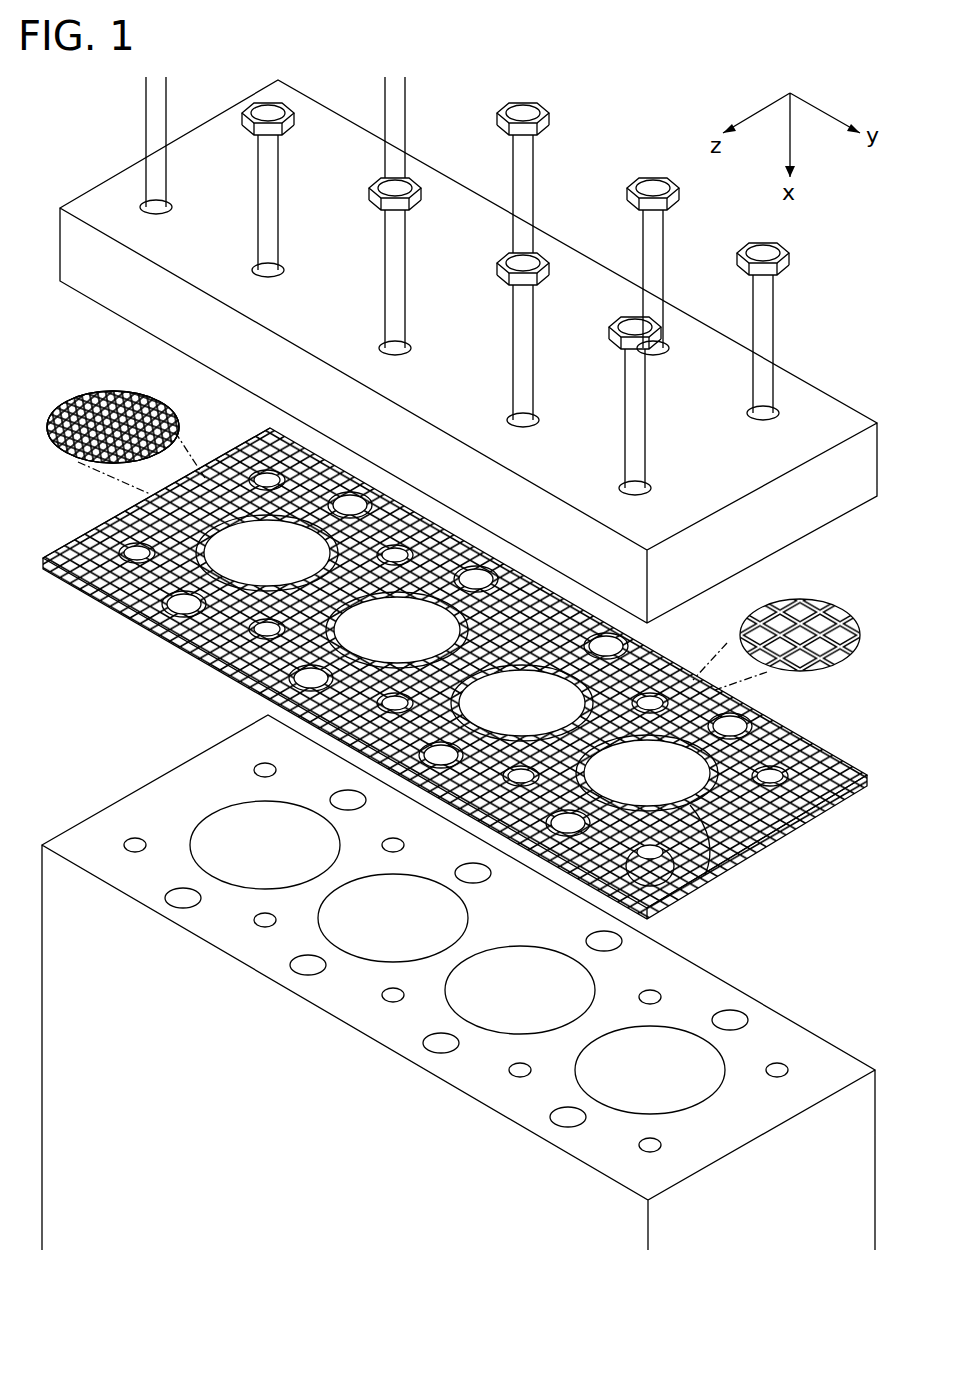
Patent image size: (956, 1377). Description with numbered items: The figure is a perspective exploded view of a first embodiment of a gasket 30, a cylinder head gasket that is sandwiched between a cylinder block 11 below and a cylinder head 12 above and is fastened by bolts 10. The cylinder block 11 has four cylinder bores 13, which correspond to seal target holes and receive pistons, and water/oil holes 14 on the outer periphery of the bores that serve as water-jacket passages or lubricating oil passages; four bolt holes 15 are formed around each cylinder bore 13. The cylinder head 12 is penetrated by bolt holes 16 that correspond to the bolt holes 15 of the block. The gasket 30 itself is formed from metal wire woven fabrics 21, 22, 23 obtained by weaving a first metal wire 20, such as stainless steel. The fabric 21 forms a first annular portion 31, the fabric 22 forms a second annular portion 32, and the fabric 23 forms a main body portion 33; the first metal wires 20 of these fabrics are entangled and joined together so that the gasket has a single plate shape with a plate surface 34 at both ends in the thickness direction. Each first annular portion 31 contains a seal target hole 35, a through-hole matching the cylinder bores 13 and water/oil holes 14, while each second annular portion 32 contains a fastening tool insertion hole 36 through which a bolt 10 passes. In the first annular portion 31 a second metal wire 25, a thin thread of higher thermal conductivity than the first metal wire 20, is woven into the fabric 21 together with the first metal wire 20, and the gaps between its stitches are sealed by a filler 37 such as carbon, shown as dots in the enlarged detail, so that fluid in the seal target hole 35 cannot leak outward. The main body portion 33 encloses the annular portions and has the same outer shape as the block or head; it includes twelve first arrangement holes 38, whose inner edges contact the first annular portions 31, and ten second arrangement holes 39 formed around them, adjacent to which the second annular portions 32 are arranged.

The bolt 10 is at (655, 178).
The cylinder block 11 is at (170, 772).
The cylinder head 12 is at (130, 166).
The cylinder bore 13 is at (278, 858).
The water/oil hole 14 is at (170, 906).
The bolt hole 15 is at (142, 840).
The bolt hole 16 is at (170, 214).
The first metal wire 20 is at (457, 497).
The metal wire woven fabric 21 is at (163, 613).
The metal wire woven fabric 22 is at (123, 560).
The metal wire woven fabric 23 is at (817, 600).
The second metal wire 25 is at (140, 397).
The gasket 30 is at (458, 630).
The first annular portion 31 is at (190, 618).
The second annular portion 32 is at (700, 890).
The main body portion 33 is at (810, 823).
The plate surface 34 is at (580, 640).
The seal target hole 35 is at (442, 710).
The fastening tool insertion hole 36 is at (648, 877).
The filler 37 is at (177, 418).
The first arrangement hole 38 is at (713, 860).
The second arrangement hole 39 is at (780, 773).